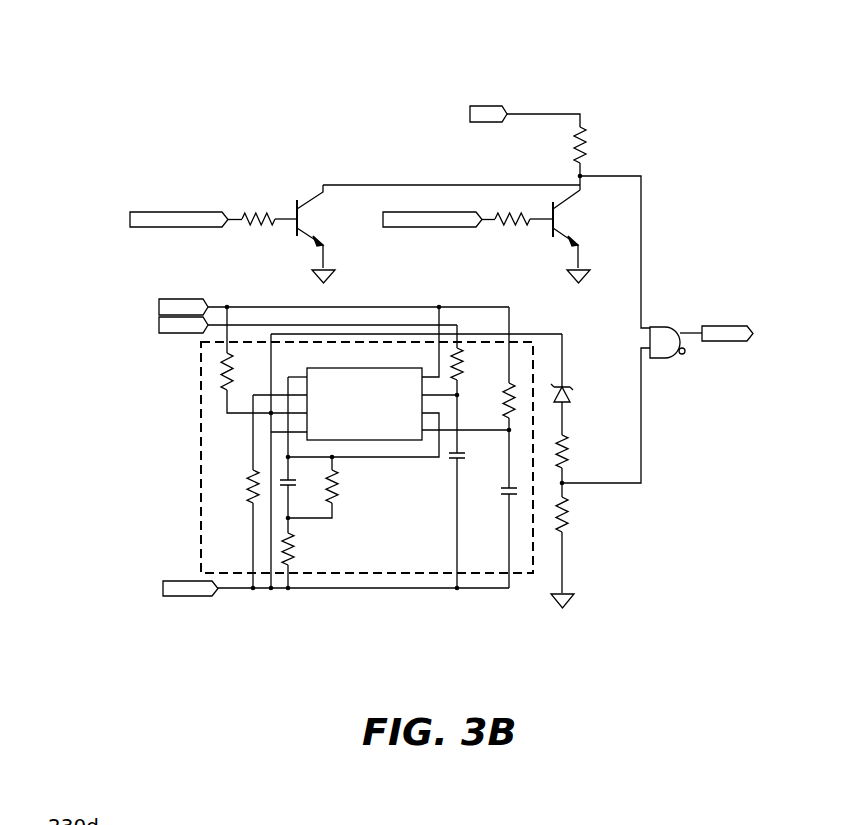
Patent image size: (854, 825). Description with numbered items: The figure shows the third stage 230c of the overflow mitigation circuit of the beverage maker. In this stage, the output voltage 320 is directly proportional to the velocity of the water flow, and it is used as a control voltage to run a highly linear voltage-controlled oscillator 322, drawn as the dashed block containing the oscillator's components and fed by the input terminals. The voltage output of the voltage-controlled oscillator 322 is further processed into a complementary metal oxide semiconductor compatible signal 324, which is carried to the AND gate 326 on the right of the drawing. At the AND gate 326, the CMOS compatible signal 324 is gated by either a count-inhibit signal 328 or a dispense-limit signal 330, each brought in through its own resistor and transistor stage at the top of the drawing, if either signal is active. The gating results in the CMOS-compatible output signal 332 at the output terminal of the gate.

The third stage 230c is at (86, 84).
The output voltage 320 is at (177, 327).
The voltage-controlled oscillator 322 is at (197, 503).
The CMOS compatible signal 324 is at (640, 413).
The AND gate 326 is at (665, 342).
The count-inhibit signal 328 is at (168, 212).
The dispense-limit signal 330 is at (423, 212).
The CMOS-compatible output signal 332 is at (725, 337).